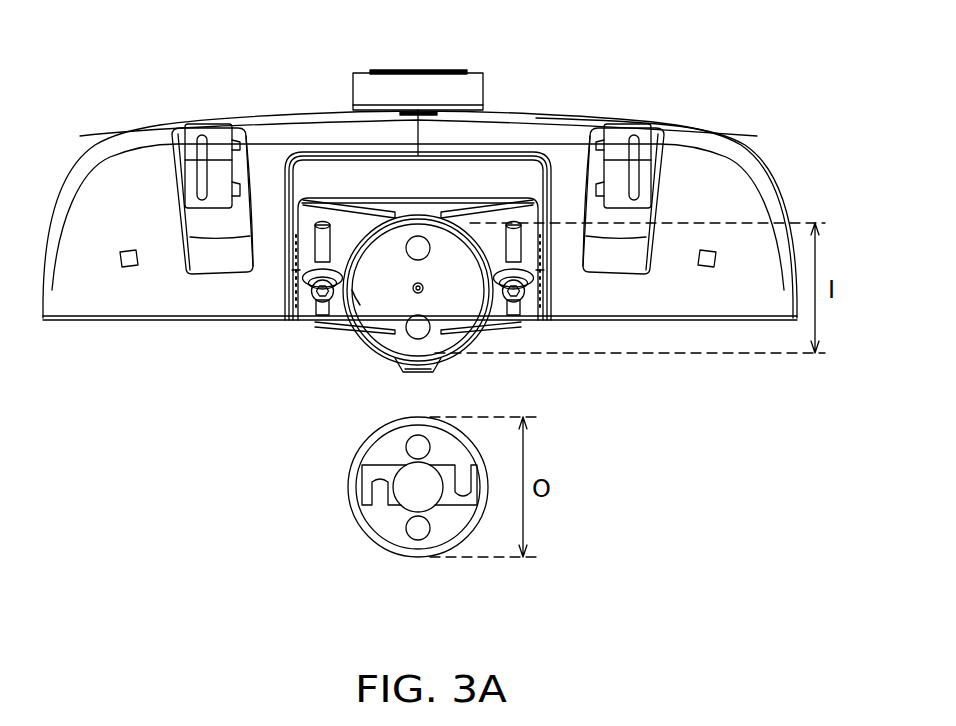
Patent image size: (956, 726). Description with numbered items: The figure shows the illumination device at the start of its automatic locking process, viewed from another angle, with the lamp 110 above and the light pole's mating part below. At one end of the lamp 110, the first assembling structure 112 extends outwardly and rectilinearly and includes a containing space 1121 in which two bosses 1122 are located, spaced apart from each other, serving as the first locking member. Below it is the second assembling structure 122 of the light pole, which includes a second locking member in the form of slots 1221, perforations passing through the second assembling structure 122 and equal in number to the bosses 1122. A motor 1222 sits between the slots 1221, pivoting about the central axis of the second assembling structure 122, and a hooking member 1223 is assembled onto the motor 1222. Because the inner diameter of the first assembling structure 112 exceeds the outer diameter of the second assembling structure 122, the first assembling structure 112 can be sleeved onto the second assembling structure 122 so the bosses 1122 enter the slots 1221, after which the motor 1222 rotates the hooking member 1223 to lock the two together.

The lamp 110 is at (131, 177).
The first assembling structure 112 is at (372, 337).
The containing space 1121 is at (372, 304).
The bosses 1122 is at (420, 327).
The second assembling structure 122 is at (411, 558).
The slots 1221 is at (418, 447).
The motor 1222 is at (417, 490).
The hooking member 1223 is at (387, 474).